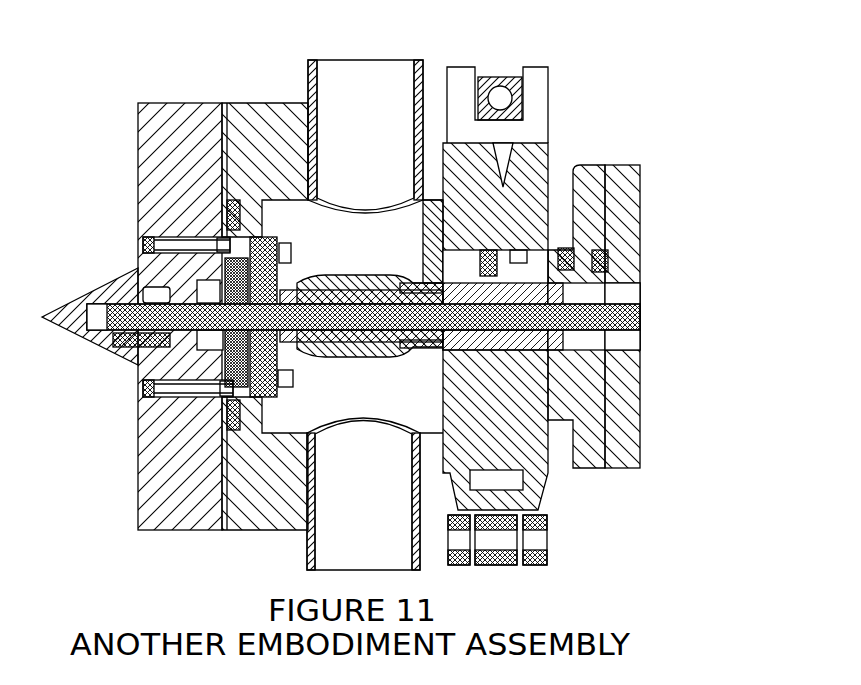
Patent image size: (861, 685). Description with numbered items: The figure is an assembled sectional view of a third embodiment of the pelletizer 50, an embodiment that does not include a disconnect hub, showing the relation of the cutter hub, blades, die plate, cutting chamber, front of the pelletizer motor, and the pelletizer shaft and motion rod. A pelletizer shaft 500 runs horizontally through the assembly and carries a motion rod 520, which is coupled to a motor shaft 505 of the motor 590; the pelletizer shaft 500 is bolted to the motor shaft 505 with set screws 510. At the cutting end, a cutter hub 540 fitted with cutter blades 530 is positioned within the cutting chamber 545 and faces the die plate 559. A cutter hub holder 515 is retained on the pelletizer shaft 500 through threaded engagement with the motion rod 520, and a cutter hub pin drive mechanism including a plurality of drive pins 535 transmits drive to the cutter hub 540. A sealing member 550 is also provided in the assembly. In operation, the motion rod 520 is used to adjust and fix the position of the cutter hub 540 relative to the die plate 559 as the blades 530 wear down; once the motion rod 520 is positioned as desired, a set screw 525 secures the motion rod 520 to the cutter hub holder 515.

The die plate 559 is at (138, 155).
The set screw 525 is at (253, 232).
The cutter hub 540 is at (240, 272).
The cutting chamber 545 is at (242, 100).
The cutter blades 530 is at (283, 230).
The cutter hub holder 515 is at (332, 270).
The drive pins 535 is at (356, 275).
The sealing member 550 is at (410, 275).
The pelletizer shaft 500 is at (430, 275).
The motion rod 520 is at (465, 298).
The set screws 510 is at (566, 248).
The motor shaft 505 is at (601, 271).
The motor 590 is at (645, 175).
The pelletizer 50 is at (677, 202).